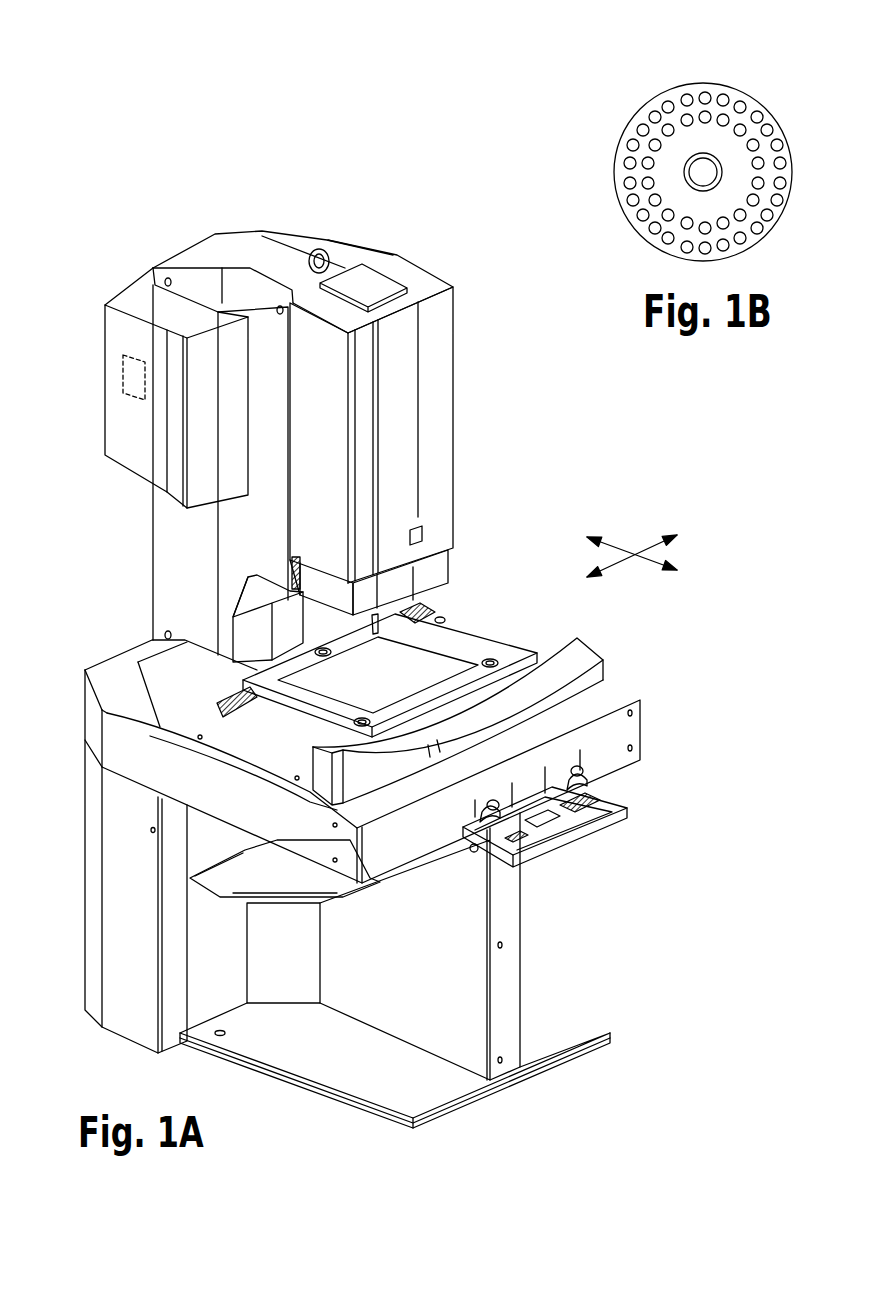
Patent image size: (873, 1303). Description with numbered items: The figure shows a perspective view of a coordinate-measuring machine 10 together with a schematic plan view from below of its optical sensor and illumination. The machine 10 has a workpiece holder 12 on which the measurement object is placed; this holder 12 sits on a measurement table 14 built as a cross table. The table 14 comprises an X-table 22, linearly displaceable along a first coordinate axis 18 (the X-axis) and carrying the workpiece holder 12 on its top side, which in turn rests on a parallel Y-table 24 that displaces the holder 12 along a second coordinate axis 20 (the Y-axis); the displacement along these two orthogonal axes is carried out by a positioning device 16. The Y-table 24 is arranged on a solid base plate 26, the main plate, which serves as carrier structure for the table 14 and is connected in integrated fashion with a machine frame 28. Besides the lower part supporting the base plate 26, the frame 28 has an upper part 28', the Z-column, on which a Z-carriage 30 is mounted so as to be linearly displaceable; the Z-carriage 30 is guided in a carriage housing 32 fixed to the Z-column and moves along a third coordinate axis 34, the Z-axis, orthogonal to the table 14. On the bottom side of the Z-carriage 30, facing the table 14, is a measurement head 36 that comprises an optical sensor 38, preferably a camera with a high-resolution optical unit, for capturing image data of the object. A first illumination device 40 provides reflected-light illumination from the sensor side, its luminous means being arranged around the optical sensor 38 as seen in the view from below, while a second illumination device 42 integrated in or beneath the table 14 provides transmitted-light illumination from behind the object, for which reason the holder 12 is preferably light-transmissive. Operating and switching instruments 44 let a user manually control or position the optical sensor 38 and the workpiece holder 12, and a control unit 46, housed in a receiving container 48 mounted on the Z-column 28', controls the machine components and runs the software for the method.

In FIG. 1A, the coordinate-measuring machine 10 is at (484, 235).
In FIG. 1A, the workpiece holder 12 is at (390, 687).
In FIG. 1A, the measurement table 14 is at (492, 641).
In FIG. 1A, the positioning device 16 is at (595, 655).
In FIG. 1A, the first coordinate axis 18 is at (640, 550).
In FIG. 1A, the second coordinate axis 20 is at (641, 560).
In FIG. 1A, the X-table 22 is at (355, 682).
In FIG. 1A, the Y-table 24 is at (168, 677).
In FIG. 1A, the base plate 26 is at (257, 700).
In FIG. 1A, the machine frame 28 is at (104, 861).
In FIG. 1A, the upper part of the machine frame 28' is at (239, 443).
In FIG. 1A, the Z-carriage 30 is at (440, 570).
In FIG. 1A, the carriage housing 32 is at (438, 437).
In FIG. 1A, the third coordinate axis 34 is at (479, 300).
In FIG. 1A, the measurement head 36 is at (432, 608).
In FIG. 1A, the optical sensor 38 is at (370, 628).
In FIG. 1B, the optical sensor 38 is at (703, 172).
In FIG. 1B, the first illumination device 40 is at (753, 117).
In FIG. 1A, the second illumination device 42 is at (182, 778).
In FIG. 1A, the operating and switching instruments 44 is at (577, 833).
In FIG. 1A, the control unit 46 is at (130, 372).
In FIG. 1A, the receiving container 48 is at (120, 418).